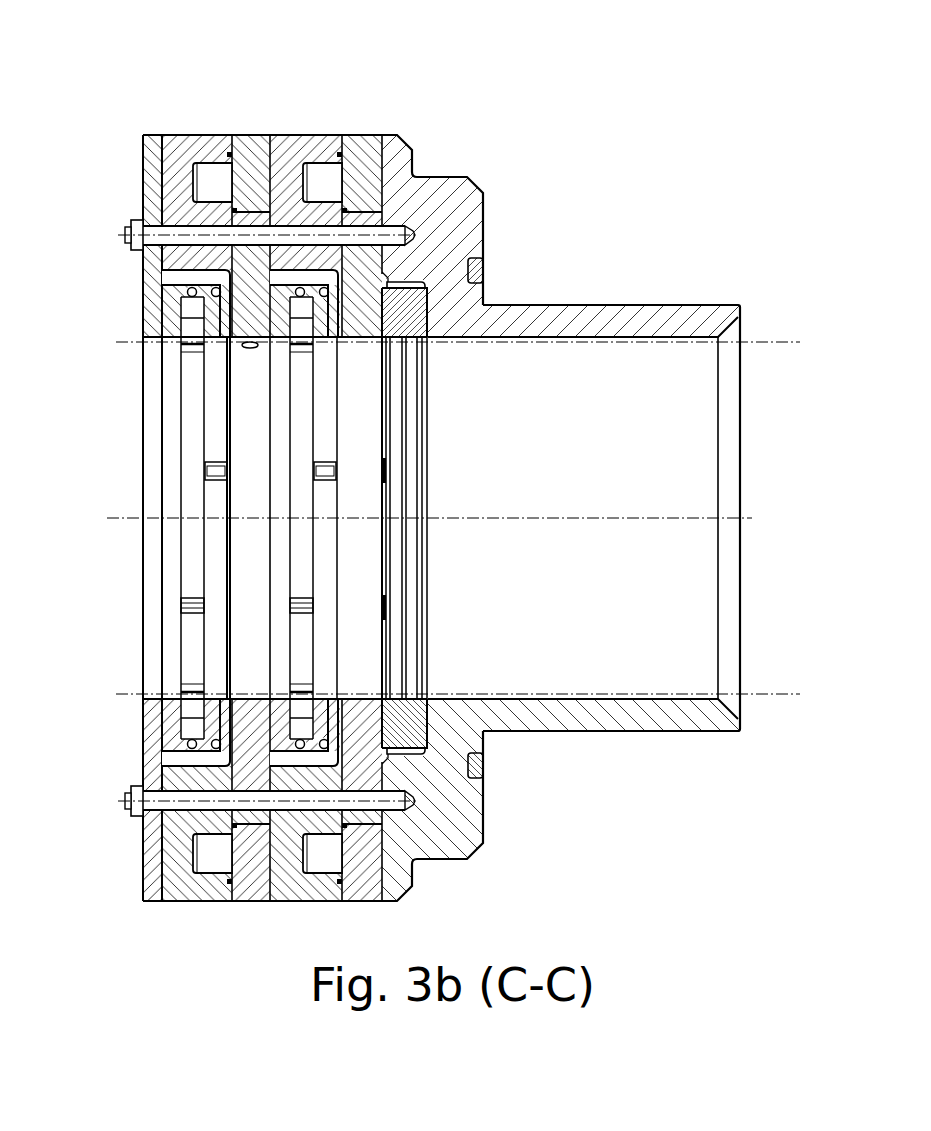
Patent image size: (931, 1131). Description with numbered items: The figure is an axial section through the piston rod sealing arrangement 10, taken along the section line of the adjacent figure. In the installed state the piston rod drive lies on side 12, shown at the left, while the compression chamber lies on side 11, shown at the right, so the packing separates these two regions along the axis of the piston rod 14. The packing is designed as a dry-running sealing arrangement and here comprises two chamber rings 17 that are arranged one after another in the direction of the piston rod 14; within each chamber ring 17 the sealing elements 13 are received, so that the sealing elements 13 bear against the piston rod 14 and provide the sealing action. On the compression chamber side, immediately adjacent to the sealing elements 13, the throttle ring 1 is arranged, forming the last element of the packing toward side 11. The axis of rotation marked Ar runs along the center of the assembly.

The piston rod sealing arrangement 10 is at (103, 97).
The compression chamber side 11 is at (791, 532).
The piston rod drive side 12 is at (68, 532).
The sealing elements 13 is at (190, 332).
The piston rod 14 is at (782, 343).
The chamber rings 17 is at (210, 145).
The throttle ring 1 is at (405, 725).
The rotation axis Ar is at (130, 519).